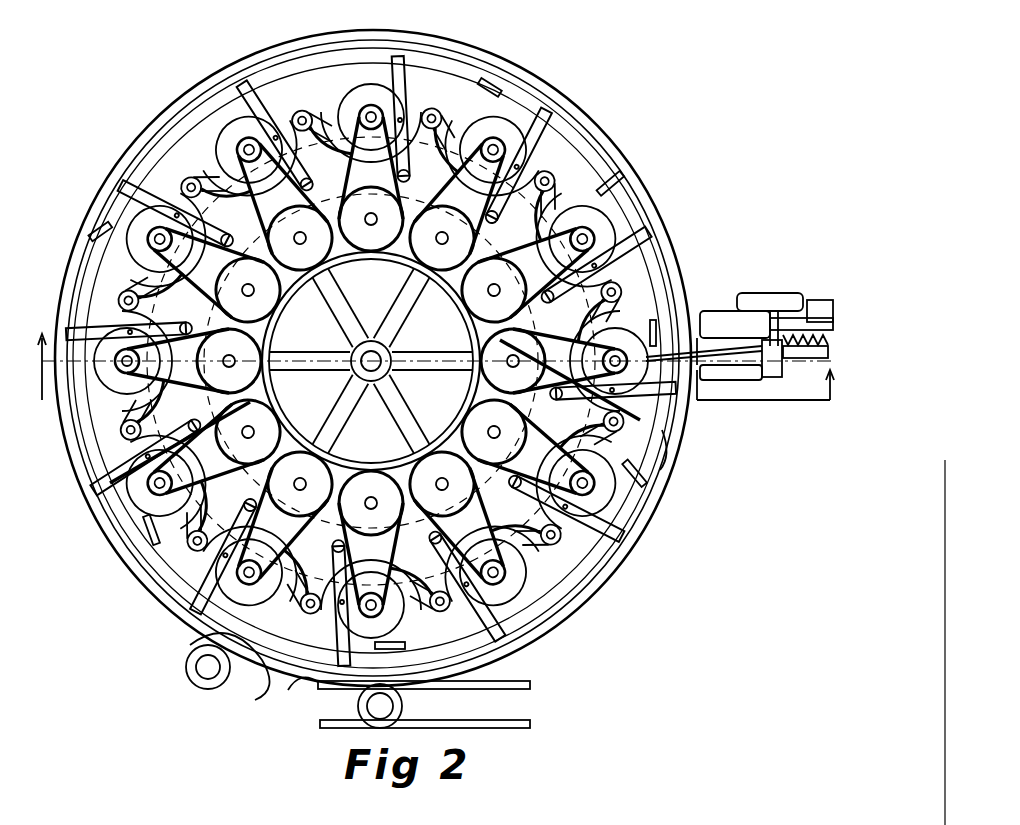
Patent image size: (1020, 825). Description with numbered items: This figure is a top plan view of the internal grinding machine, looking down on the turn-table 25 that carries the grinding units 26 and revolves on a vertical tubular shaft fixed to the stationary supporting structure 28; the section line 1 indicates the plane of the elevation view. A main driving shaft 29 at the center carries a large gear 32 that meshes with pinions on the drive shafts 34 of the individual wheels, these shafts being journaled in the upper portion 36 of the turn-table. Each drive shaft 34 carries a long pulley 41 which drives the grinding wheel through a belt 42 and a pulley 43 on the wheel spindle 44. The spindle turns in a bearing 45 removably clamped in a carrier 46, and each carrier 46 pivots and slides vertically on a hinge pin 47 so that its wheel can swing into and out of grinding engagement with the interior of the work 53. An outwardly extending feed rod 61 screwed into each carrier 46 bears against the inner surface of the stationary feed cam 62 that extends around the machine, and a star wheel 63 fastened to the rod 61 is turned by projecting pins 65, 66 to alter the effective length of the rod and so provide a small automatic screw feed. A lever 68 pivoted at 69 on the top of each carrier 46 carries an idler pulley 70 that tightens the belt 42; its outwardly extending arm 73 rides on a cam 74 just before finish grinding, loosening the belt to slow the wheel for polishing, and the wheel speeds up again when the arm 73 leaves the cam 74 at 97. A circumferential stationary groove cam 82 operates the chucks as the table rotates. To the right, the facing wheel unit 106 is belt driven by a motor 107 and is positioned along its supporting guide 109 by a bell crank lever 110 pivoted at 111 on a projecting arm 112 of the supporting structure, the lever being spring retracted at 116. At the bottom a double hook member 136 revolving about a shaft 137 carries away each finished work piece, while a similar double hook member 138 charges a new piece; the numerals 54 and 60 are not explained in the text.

The section line 1 is at (434, 358).
The turn-table 25 is at (184, 138).
The grinding units 26 is at (399, 385).
The stationary supporting structure 28 is at (108, 520).
The main driving shaft 29 is at (385, 357).
The large gear 32 is at (405, 298).
The drive shafts 34 is at (423, 322).
The upper portion of the turn-table 36 is at (371, 361).
The long pulley 41 is at (362, 364).
The belt 42 is at (371, 361).
The pulley 43 is at (357, 318).
The wheel spindle 44 is at (138, 216).
The bearing 45 is at (258, 128).
The carrier 46 is at (371, 361).
The hinge pin 47 is at (371, 359).
The work 53 is at (403, 706).
The guide 54 is at (409, 523).
The stop 60 is at (461, 628).
The feed rod 61 is at (98, 232).
The feed cam 62 is at (166, 172).
The star wheel 63 is at (628, 186).
The projecting pin 65 is at (86, 266).
The projecting pin 66 is at (699, 268).
The lever 68 is at (62, 452).
The pivot 69 is at (398, 183).
The idler pulley 70 is at (399, 362).
The arm 73 is at (415, 58).
The cam 74 is at (484, 571).
The groove cam 82 is at (375, 411).
The point where arm leaves cam 97 is at (195, 645).
The wheel unit 106 is at (741, 368).
The motor 107 is at (770, 293).
The supporting guide 109 is at (804, 310).
The bell crank lever 110 is at (728, 332).
The pivot 111 is at (800, 360).
The projecting arm 112 is at (730, 380).
The spring retraction 116 is at (814, 433).
The double hook member 136 is at (360, 690).
The shaft 137 is at (385, 650).
The double hook member 138 is at (186, 670).